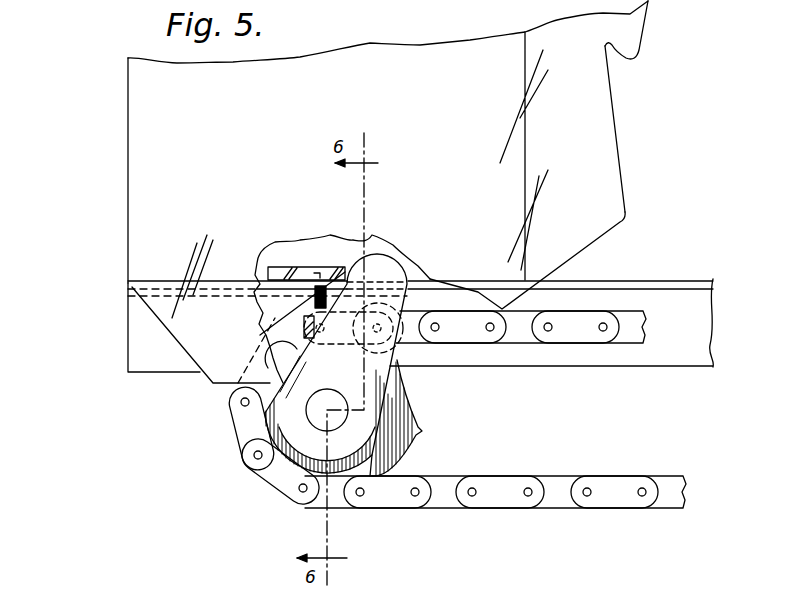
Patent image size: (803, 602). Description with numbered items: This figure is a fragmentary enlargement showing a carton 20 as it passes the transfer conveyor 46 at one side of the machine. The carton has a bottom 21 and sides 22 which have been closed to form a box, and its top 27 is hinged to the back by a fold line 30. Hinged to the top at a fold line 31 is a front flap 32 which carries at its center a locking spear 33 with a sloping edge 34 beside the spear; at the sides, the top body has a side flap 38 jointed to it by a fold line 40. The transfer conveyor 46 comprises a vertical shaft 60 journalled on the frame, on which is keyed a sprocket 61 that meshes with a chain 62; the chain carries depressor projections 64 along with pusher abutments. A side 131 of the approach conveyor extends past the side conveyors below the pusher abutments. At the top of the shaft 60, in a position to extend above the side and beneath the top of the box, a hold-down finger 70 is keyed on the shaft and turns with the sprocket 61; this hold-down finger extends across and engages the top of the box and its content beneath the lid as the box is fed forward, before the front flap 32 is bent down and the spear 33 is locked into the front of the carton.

The carton 20 is at (124, 166).
The top 27 is at (388, 51).
The fold line 30 is at (128, 198).
The fold line 31 is at (527, 155).
The front flap 32 is at (527, 239).
The locking spear 33 is at (640, 30).
The sloping edge 34 is at (622, 168).
The fold line 40 is at (220, 282).
The bottom 21 is at (305, 252).
The side flap 38 is at (201, 333).
The depressor projection 64 is at (313, 300).
The hold-down finger 70 is at (388, 300).
The side 22 is at (425, 279).
The side of approach conveyor 131 is at (697, 271).
The vertical shaft 60 is at (313, 407).
The sprocket 61 is at (400, 422).
The chain 62 is at (485, 477).
The transfer conveyor 46 is at (572, 474).